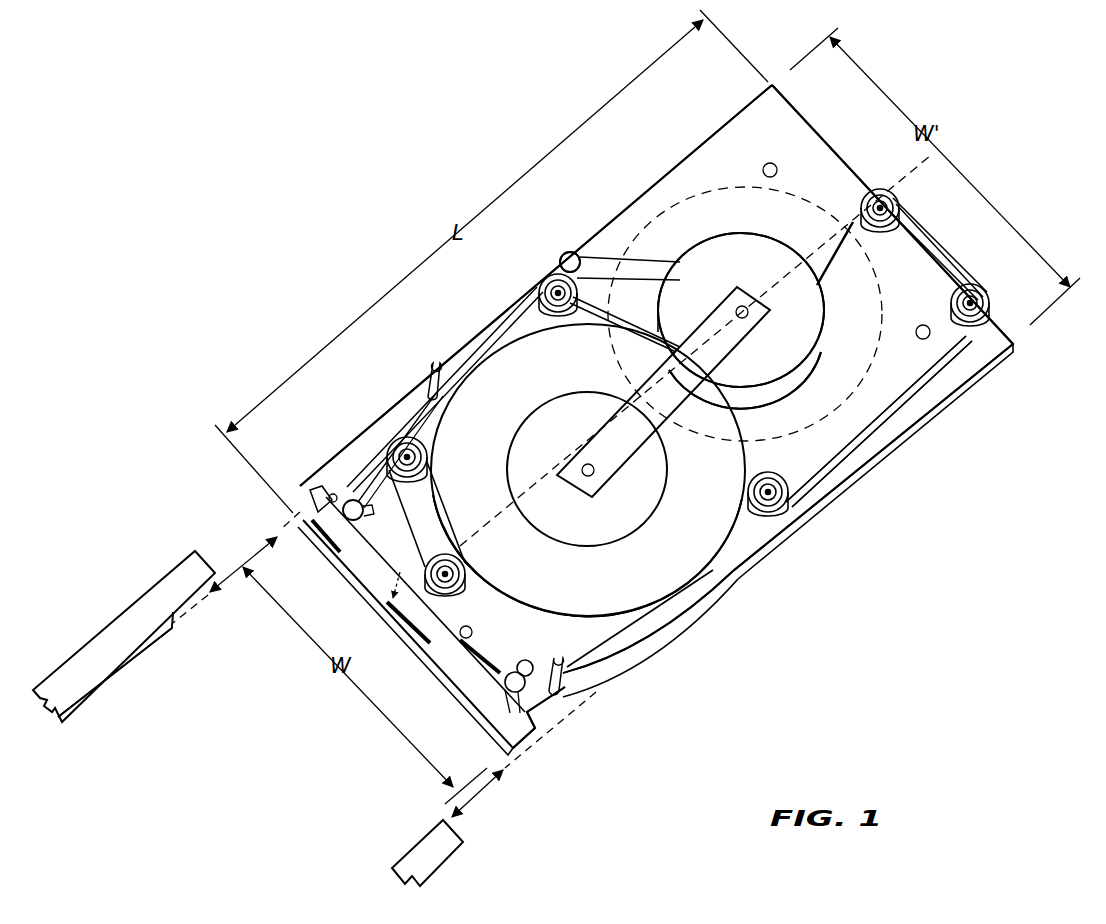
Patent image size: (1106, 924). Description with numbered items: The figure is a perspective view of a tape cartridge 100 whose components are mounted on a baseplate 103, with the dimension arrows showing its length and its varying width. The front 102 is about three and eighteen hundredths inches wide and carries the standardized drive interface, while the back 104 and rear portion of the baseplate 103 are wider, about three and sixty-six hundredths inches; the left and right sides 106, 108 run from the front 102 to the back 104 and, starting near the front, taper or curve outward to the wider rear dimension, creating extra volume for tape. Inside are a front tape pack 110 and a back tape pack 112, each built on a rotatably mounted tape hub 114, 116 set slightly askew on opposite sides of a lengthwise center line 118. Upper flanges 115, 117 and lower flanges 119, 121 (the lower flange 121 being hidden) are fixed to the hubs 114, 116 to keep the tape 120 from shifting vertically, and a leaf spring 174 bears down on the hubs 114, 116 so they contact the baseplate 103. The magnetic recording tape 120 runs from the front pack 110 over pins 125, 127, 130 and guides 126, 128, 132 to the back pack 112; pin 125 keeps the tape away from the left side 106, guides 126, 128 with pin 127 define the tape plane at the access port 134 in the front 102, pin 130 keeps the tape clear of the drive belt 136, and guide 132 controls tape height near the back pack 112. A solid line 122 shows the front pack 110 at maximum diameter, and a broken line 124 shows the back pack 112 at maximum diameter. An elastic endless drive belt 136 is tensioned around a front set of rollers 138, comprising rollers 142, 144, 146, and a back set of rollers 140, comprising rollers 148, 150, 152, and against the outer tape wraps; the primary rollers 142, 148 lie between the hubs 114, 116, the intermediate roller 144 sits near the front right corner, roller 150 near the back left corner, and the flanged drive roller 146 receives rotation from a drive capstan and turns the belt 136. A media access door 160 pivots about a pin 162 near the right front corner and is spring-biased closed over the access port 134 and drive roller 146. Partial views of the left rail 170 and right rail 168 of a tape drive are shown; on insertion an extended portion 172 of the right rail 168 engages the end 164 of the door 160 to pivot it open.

The tape cartridge 100 is at (933, 518).
The front 102 is at (490, 733).
The baseplate 103 is at (745, 112).
The back 104 is at (857, 165).
The left side 106 is at (663, 653).
The right side 108 is at (645, 182).
The front tape pack 110 is at (588, 470).
The back tape pack 112 is at (741, 310).
The front tape hub 114 is at (612, 548).
The upper flange 115 is at (660, 505).
The back tape hub 116 is at (818, 378).
The upper flange 117 is at (735, 245).
The center line 118 is at (683, 408).
The lower flange 119 is at (752, 408).
The magnetic recording tape 120 is at (652, 262).
The lower flange 121 is at (742, 547).
The solid line 122 is at (737, 567).
The broken line 124 is at (882, 288).
The pin 125 is at (572, 702).
The guide 126 is at (532, 740).
The pin 127 is at (362, 607).
The guide 128 is at (335, 495).
The pin 130 is at (428, 370).
The third guide 132 is at (570, 250).
The access port 134 is at (390, 615).
The drive belt 136 is at (500, 325).
The front set of rollers 138 is at (540, 285).
The back set of rollers 140 is at (935, 236).
The roller 142 is at (560, 258).
The intermediate roller 144 is at (355, 500).
The drive roller 146 is at (470, 645).
The roller 148 is at (786, 535).
The roller 150 is at (990, 308).
The roller 152 is at (902, 208).
The media access door 160 is at (320, 553).
The pin 162 is at (313, 483).
The end 164 is at (295, 506).
The right rail 168 is at (120, 607).
The left rail 170 is at (446, 848).
The extended portion 172 is at (150, 635).
The leaf spring 174 is at (586, 480).